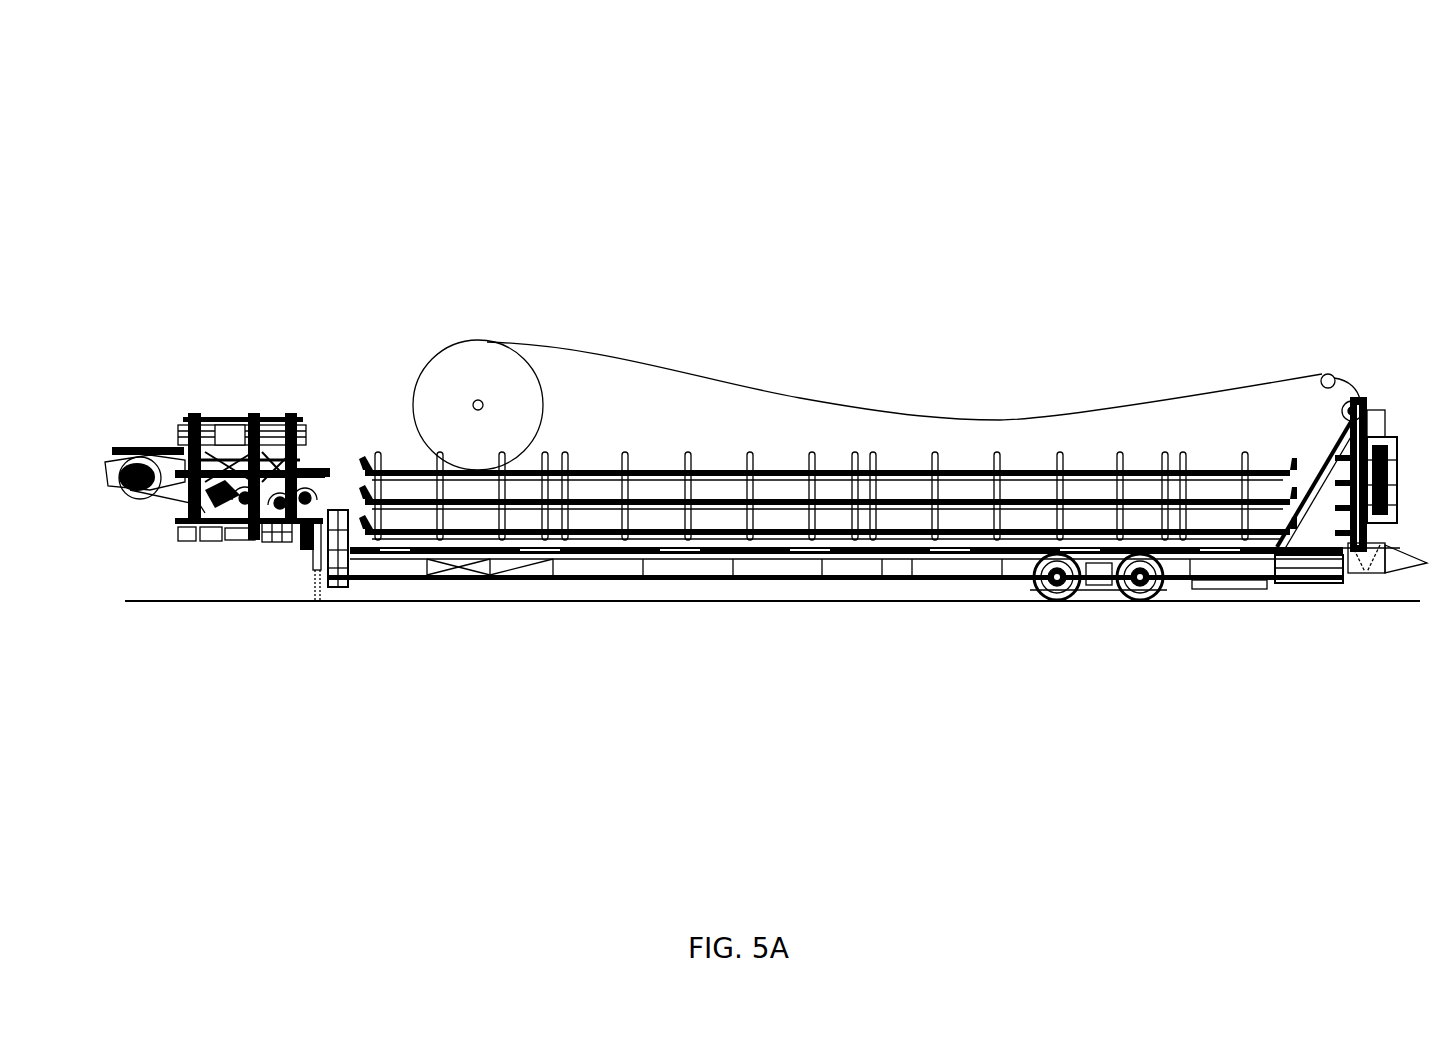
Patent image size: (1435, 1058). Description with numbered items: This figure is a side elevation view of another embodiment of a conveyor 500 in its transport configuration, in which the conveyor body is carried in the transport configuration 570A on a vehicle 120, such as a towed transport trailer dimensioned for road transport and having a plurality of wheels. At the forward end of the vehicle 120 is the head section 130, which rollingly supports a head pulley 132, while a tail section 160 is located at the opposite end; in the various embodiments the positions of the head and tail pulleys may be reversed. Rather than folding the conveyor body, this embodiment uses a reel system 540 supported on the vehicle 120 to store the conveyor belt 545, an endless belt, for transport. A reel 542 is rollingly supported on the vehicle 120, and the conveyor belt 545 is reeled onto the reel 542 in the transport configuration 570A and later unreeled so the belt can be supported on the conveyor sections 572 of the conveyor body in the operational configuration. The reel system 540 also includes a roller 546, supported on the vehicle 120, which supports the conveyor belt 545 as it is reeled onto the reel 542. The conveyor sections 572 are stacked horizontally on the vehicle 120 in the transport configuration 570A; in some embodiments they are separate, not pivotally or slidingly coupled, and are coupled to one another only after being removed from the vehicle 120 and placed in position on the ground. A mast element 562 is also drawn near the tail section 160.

The conveyor 500 is at (1378, 172).
The vehicle 120 is at (780, 578).
The head section 130 is at (130, 385).
The head pulley 132 is at (112, 462).
The tail section 160 is at (1403, 358).
The reel system 540 is at (990, 285).
The reel 542 is at (430, 363).
The conveyor belt 545 is at (678, 373).
The roller 546 is at (1322, 388).
The mast 562 is at (1348, 426).
The transport configuration 570A is at (303, 360).
The conveyor sections 572 is at (403, 470).